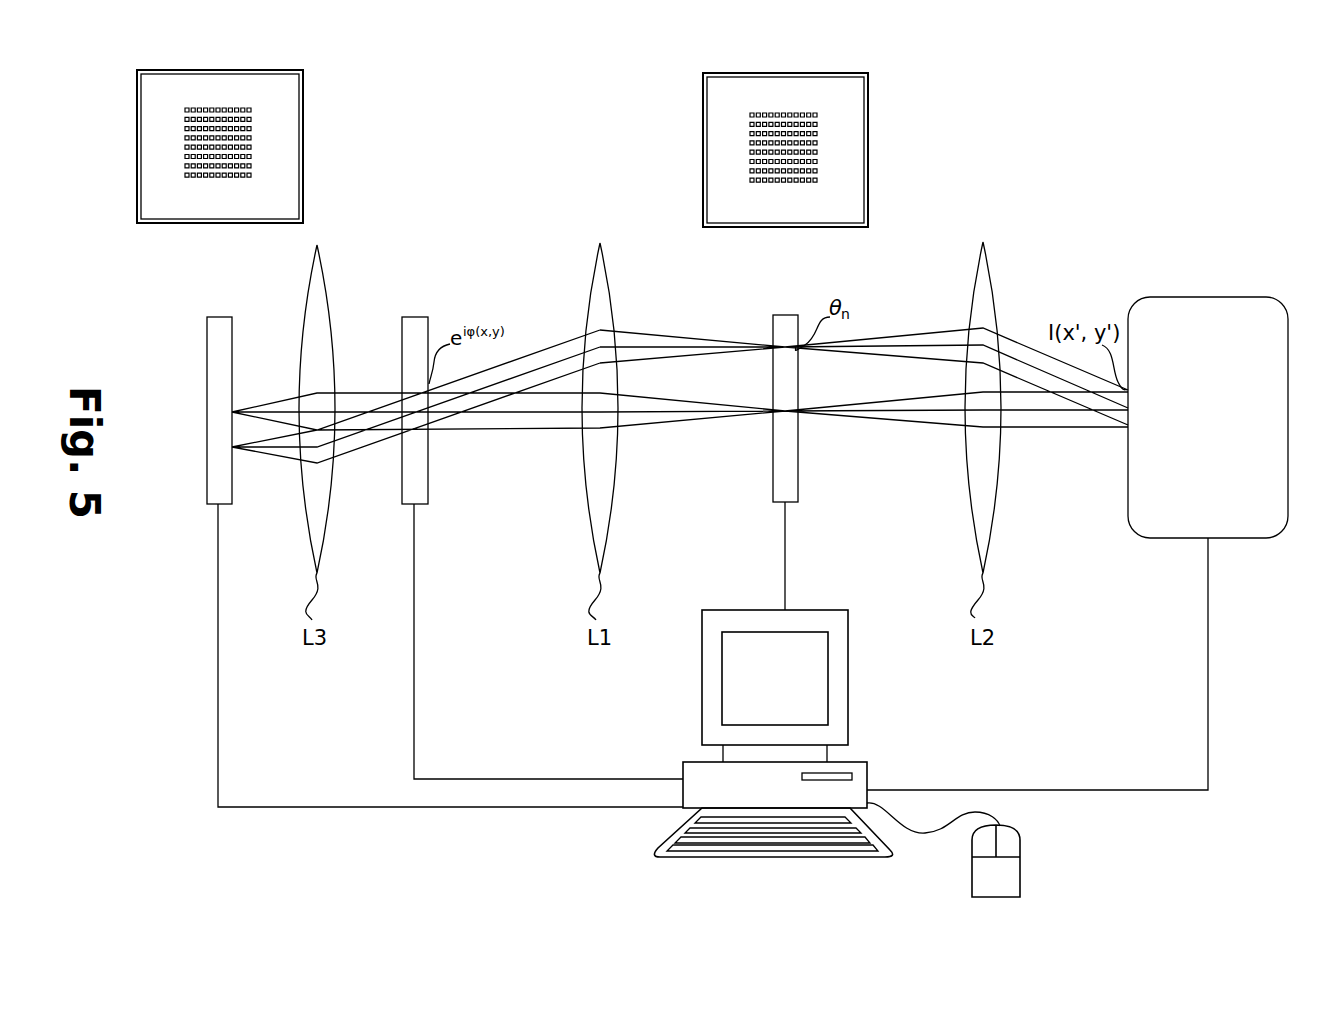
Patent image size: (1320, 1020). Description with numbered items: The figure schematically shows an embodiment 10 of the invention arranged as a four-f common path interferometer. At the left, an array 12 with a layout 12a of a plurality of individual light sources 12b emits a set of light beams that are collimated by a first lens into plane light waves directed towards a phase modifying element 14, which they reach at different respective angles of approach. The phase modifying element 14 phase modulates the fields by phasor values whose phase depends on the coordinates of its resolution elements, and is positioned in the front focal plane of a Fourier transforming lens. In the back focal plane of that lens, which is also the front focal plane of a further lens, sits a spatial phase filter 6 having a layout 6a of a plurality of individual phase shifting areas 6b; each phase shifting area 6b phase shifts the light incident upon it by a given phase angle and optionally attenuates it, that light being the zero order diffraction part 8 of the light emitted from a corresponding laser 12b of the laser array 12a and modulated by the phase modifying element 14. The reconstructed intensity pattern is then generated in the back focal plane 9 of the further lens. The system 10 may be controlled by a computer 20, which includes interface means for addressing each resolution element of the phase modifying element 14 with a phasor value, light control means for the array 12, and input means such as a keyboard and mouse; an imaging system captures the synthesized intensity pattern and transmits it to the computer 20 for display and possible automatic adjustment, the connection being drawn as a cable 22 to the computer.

The spatial phase filter 6 is at (795, 497).
The layout of phase shifting areas 6a is at (857, 102).
The phase shifting area 6b is at (817, 178).
The zero order diffraction part 8 is at (667, 347).
The back focal plane of lens L2 9 is at (1127, 485).
The embodiment of the invention (system) 10 is at (1043, 177).
The array of light sources 12 is at (213, 483).
The layout of light sources 12a is at (294, 107).
The individual light source 12b is at (251, 166).
The phase modifying element 14 is at (428, 497).
The computer 20 is at (707, 725).
The connection cable 22 is at (1225, 535).